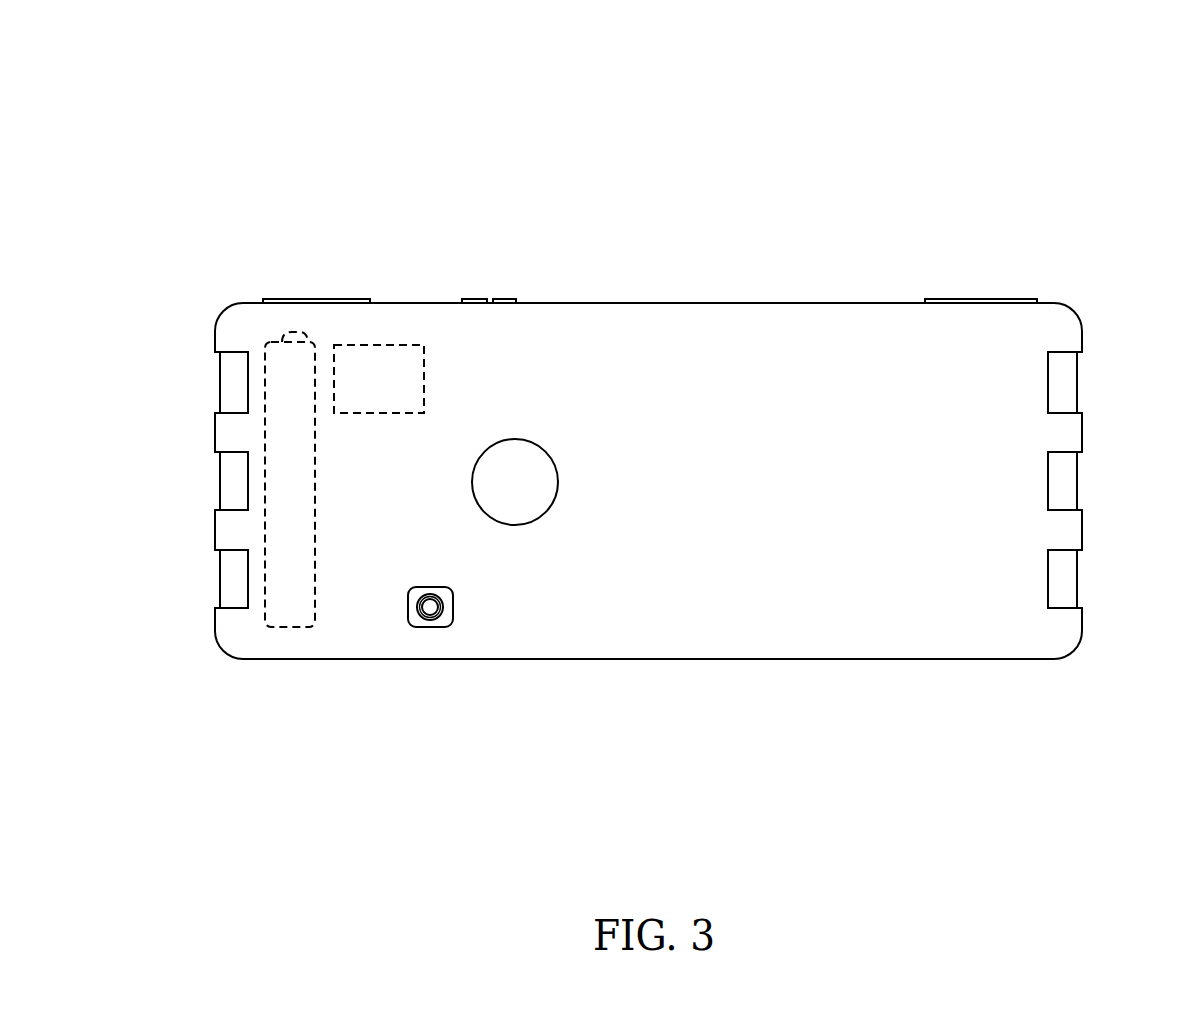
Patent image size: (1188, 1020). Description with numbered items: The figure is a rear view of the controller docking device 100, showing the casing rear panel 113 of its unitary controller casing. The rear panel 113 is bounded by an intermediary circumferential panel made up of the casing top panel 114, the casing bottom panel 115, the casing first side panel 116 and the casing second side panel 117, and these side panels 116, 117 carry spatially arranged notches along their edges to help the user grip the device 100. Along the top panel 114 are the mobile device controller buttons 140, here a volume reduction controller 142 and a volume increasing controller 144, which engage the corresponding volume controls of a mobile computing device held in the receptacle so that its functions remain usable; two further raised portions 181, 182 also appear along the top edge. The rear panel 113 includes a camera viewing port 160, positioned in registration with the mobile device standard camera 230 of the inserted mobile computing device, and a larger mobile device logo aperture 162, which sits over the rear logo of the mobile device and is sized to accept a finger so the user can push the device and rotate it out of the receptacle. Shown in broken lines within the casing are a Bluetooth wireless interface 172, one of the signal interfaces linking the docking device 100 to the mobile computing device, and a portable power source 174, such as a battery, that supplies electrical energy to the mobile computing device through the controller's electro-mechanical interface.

The controller docking device 100 is at (182, 165).
The casing rear panel 113 is at (743, 600).
The casing top panel 114 is at (645, 303).
The casing bottom panel 115 is at (547, 660).
The casing first side panel 116 is at (1078, 578).
The casing second side panel 117 is at (218, 577).
The mobile device controller button 140 is at (486, 286).
The volume reduction controller 142 is at (500, 298).
The volume increasing controller 144 is at (473, 298).
The camera viewing port 160 is at (453, 608).
The mobile device logo aperture 162 is at (548, 508).
The Bluetooth wireless interface 172 is at (385, 380).
The portable power source 174 is at (280, 400).
The top cover portion 181 is at (972, 298).
The top cover portion 182 is at (316, 298).
The mobile device standard camera 230 is at (447, 590).